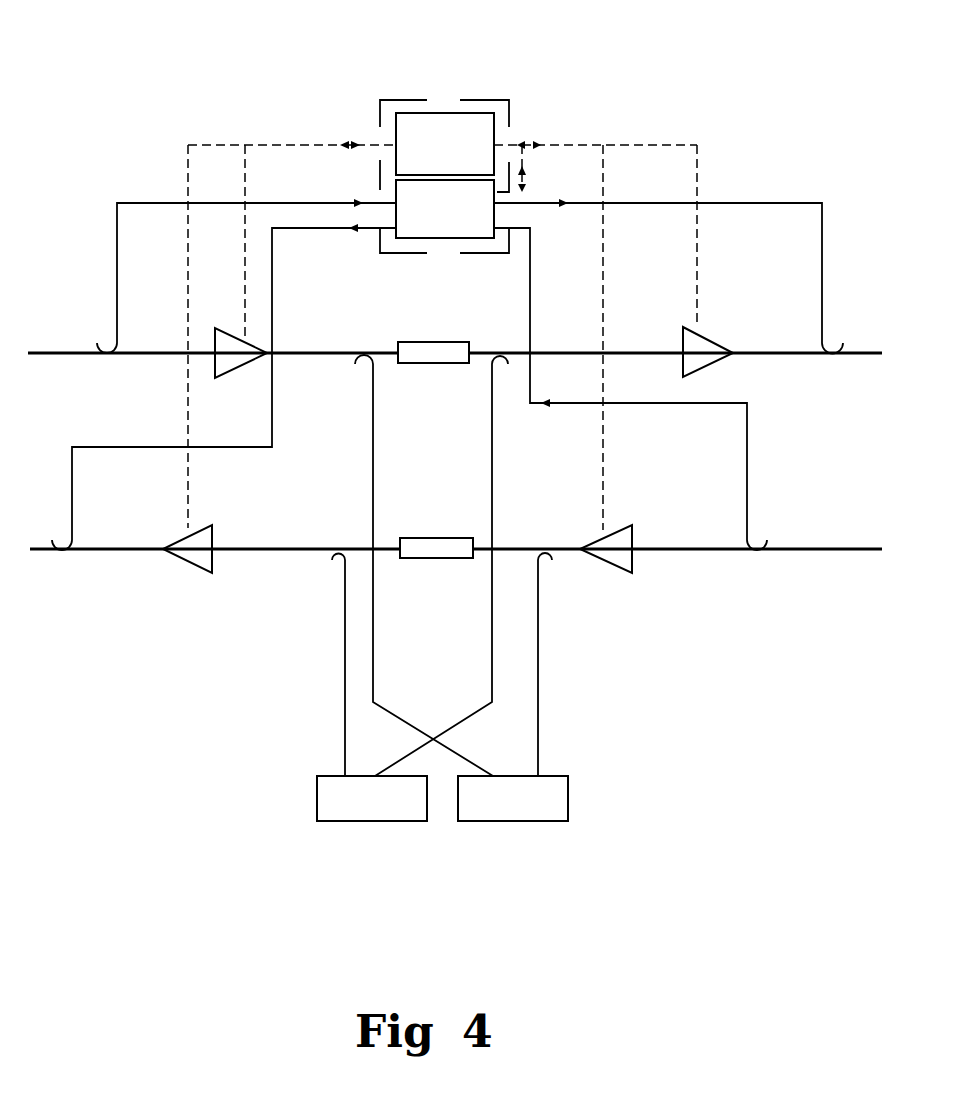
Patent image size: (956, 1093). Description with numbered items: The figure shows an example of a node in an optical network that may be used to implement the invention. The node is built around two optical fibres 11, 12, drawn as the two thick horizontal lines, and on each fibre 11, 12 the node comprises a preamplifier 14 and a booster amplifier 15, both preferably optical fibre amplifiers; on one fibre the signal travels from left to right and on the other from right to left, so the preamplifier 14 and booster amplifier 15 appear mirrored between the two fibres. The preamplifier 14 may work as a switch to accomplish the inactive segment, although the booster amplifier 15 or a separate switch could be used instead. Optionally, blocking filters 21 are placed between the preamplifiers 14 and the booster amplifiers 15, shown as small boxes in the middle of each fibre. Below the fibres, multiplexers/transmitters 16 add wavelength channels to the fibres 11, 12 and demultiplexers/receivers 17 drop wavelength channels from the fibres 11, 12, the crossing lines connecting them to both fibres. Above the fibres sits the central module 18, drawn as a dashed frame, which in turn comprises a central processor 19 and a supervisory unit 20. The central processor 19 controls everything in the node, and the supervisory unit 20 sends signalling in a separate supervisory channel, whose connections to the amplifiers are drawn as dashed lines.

The fibre 11 is at (83, 355).
The fibre 12 is at (90, 552).
The preamplifier 14 is at (237, 368).
The booster amplifier 15 is at (708, 337).
The multiplexer/transmitter 16 is at (375, 822).
The demultiplexer/receiver 17 is at (500, 822).
The central module 18 is at (460, 100).
The central processor 19 is at (494, 112).
The supervisory unit 20 is at (494, 188).
The blocking filter 21 is at (423, 342).